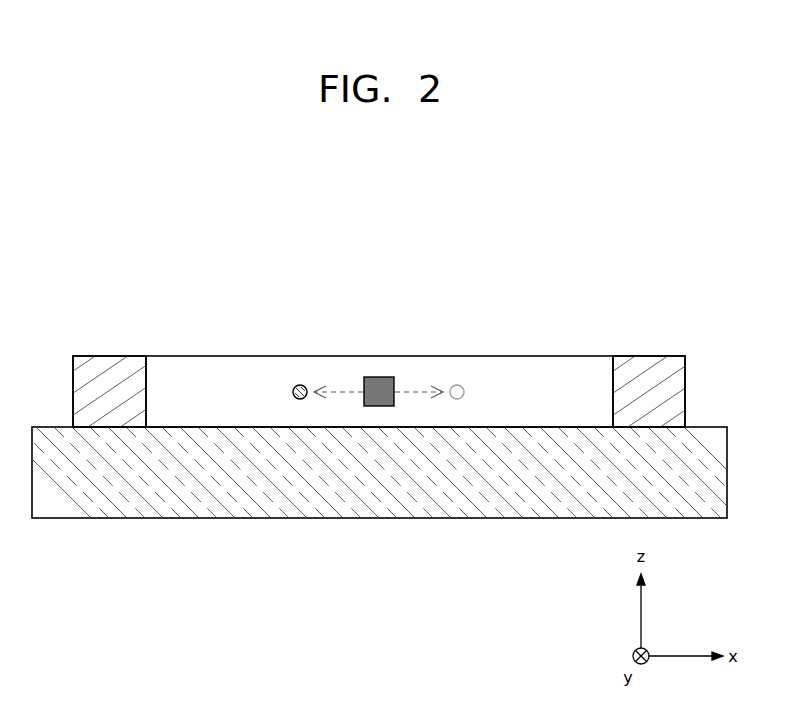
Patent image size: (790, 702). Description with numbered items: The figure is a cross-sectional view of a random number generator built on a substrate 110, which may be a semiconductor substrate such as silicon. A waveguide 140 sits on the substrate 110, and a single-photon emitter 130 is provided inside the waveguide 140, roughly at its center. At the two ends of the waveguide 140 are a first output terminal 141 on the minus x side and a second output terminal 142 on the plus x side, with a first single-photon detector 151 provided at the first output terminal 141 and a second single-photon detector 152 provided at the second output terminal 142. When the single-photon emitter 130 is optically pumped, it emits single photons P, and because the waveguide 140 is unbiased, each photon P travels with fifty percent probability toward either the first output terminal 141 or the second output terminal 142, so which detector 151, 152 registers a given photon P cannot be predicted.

The substrate 110 is at (377, 503).
The single-photon emitter 130 is at (380, 377).
The waveguide 140 is at (524, 360).
The first output terminal 141 is at (146, 378).
The second output terminal 142 is at (613, 378).
The first single-photon detector 151 is at (110, 360).
The second single-photon detector 152 is at (650, 360).
The single photons P is at (300, 383).